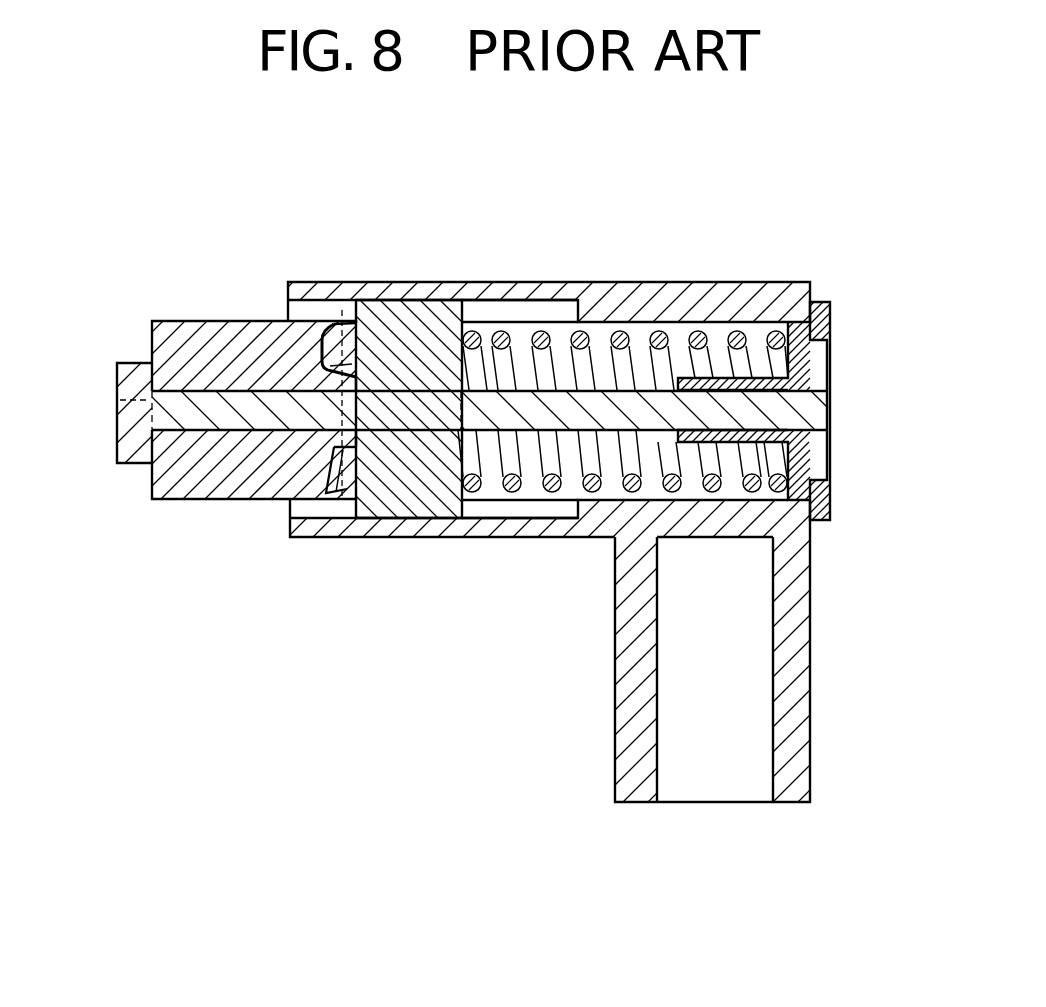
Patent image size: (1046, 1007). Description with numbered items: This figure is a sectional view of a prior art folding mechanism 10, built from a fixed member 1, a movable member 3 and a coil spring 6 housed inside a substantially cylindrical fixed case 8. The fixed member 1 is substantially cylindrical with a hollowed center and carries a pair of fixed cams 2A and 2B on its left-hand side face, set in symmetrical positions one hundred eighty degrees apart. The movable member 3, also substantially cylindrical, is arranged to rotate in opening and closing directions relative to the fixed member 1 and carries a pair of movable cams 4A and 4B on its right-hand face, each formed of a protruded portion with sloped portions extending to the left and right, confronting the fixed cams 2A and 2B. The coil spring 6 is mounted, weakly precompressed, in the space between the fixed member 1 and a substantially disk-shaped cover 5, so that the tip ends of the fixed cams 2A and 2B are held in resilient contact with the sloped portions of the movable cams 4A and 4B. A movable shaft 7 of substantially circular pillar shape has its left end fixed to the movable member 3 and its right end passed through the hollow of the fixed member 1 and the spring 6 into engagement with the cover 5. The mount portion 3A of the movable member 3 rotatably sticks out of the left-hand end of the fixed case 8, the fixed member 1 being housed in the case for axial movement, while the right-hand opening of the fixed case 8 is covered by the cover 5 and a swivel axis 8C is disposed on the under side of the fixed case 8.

The fixed member 1 is at (426, 328).
The fixed cam 2A is at (340, 380).
The fixed cam 2B is at (348, 457).
The movable member 3 is at (245, 500).
The mount portion 3A is at (168, 322).
The movable cam 4A is at (317, 347).
The movable cam 4B is at (338, 490).
The cover 5 is at (832, 505).
The coil spring 6 is at (660, 335).
The movable shaft 7 is at (135, 463).
The fixed case 8 is at (775, 284).
The swivel axis 8C is at (812, 740).
The folding mechanism 10 is at (835, 302).